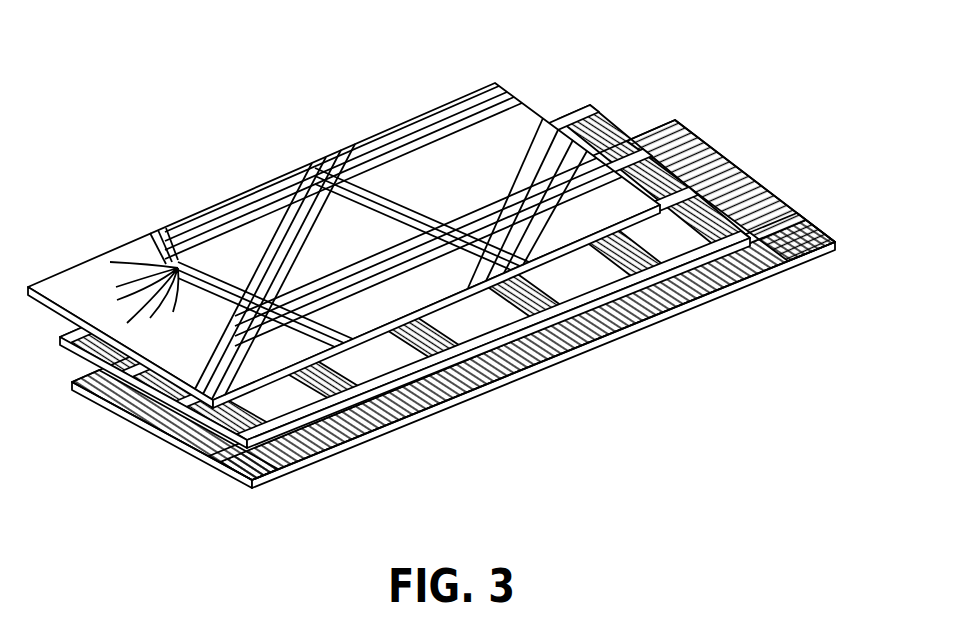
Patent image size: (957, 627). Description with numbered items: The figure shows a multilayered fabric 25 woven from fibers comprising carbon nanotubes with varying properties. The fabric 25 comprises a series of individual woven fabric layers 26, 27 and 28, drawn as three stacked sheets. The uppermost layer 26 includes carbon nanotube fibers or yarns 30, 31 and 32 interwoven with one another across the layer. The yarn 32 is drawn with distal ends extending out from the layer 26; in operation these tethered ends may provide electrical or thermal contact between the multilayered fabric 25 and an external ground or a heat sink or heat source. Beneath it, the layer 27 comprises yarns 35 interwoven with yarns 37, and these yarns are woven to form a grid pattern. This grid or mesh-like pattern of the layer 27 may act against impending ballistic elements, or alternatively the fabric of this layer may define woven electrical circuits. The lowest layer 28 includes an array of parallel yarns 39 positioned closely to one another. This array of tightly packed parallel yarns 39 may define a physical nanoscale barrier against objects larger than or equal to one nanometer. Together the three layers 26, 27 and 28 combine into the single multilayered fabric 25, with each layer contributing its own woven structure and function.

The multilayered fabric 25 is at (113, 77).
The woven fabric layer 26 is at (504, 87).
The woven fabric layer 27 is at (405, 264).
The woven fabric layer 28 is at (686, 120).
The carbon nanotube fiber or yarn 30 is at (390, 153).
The carbon nanotube fiber or yarn 31 is at (286, 190).
The carbon nanotube fiber or yarn 32 is at (101, 288).
The yarns 35 is at (457, 347).
The yarns 37 is at (575, 297).
The parallel yarns 39 is at (758, 202).